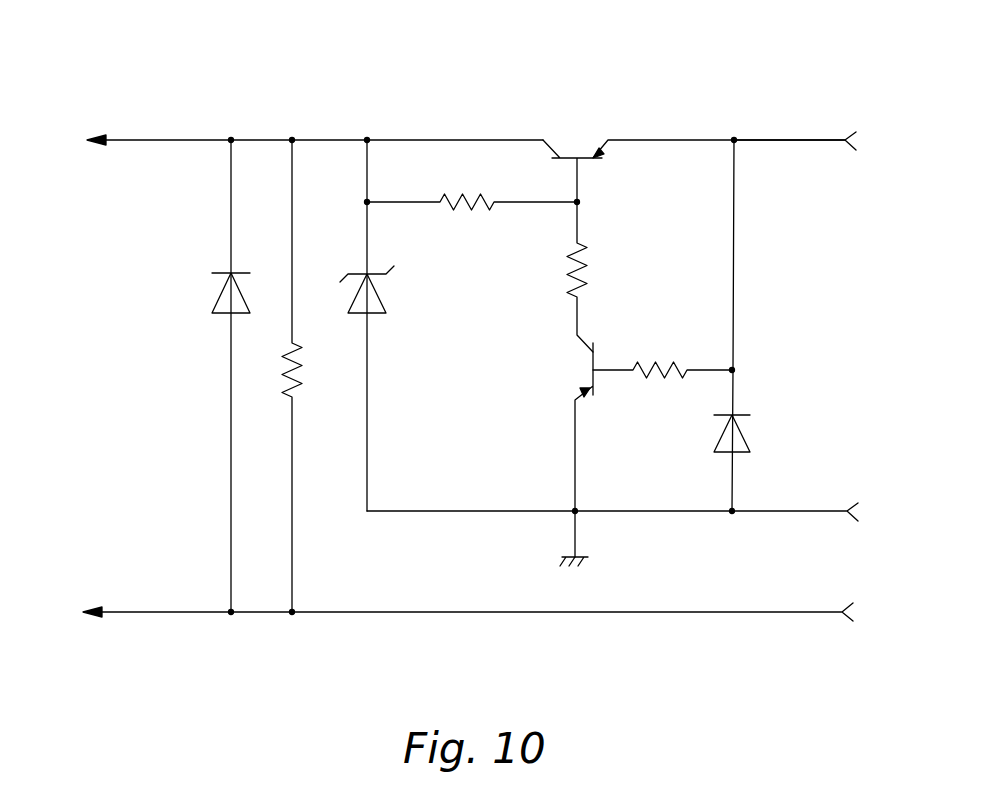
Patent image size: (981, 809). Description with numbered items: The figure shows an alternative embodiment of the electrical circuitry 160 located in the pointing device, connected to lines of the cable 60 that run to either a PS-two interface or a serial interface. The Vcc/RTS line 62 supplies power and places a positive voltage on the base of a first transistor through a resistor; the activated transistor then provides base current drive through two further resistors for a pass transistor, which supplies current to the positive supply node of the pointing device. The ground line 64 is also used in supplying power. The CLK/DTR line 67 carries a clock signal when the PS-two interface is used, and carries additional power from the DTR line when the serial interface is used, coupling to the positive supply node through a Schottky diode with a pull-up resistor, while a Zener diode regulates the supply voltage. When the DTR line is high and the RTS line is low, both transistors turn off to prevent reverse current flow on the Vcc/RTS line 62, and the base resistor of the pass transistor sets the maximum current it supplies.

The electrical circuitry 160 is at (466, 92).
The cable 60 is at (832, 93).
The Vcc/RTS line 62 is at (818, 144).
The ground (GND) line 64 is at (803, 514).
The CLK/DTR line 67 is at (769, 614).